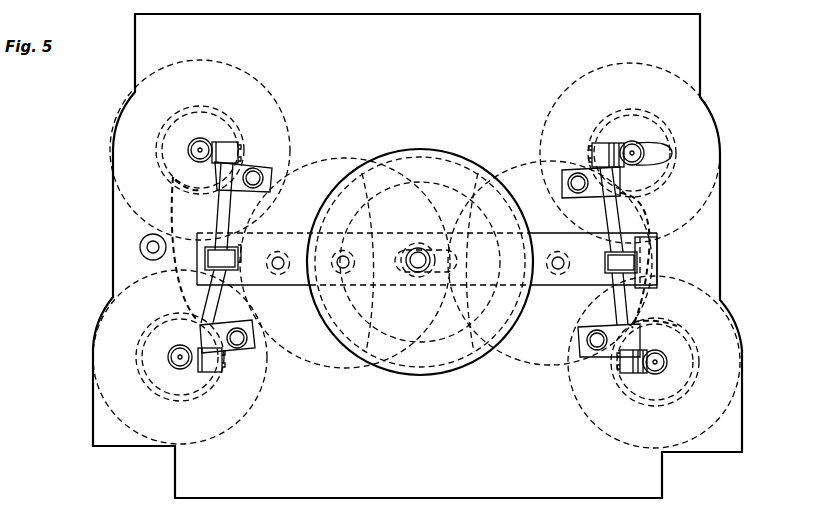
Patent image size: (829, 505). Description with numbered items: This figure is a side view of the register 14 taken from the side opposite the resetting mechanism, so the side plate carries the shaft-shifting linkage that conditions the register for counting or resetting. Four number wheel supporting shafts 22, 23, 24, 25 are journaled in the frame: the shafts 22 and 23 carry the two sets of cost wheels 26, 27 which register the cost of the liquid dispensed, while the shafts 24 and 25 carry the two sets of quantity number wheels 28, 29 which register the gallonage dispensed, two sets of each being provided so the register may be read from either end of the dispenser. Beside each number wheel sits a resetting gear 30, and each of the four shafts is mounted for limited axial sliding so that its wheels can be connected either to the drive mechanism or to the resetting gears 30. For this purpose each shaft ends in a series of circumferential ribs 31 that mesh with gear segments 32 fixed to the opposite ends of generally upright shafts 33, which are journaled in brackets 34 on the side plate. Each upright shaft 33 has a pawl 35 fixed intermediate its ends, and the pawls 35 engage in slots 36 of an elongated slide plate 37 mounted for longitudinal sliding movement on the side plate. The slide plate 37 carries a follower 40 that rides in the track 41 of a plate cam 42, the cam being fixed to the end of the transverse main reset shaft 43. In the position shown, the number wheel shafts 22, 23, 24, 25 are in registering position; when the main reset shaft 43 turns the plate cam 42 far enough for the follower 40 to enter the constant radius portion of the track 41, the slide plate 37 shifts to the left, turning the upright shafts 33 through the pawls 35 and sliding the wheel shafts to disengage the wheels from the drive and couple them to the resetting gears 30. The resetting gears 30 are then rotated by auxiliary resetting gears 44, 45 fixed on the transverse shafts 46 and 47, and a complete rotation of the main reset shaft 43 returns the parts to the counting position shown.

The register 14 is at (125, 73).
The number wheel supporting shaft 22 is at (208, 140).
The number wheel supporting shaft 23 is at (667, 140).
The number wheel supporting shaft 24 is at (170, 367).
The number wheel supporting shaft 25 is at (661, 362).
The set of number wheels 26 is at (245, 61).
The set of number wheels 27 is at (578, 77).
The set of number wheels 28 is at (283, 405).
The set of number wheels 29 is at (612, 436).
The resetting gear 30 is at (190, 194).
The circumferential rib 31 is at (208, 166).
The gear segment 32 is at (224, 142).
The upright shaft 33 is at (225, 205).
The bracket 34 is at (264, 192).
The pawl 35 is at (421, 260).
The slot 36 is at (240, 250).
The slide plate 37 is at (269, 287).
The follower 40 is at (340, 275).
The track 41 is at (368, 348).
The plate cam 42 is at (440, 375).
The main reset shaft 43 is at (420, 268).
The auxiliary resetting gear 44 is at (552, 366).
The auxiliary resetting gear 45 is at (288, 363).
The transverse rotatable shaft 46 is at (560, 262).
The transverse rotatable shaft 47 is at (274, 266).